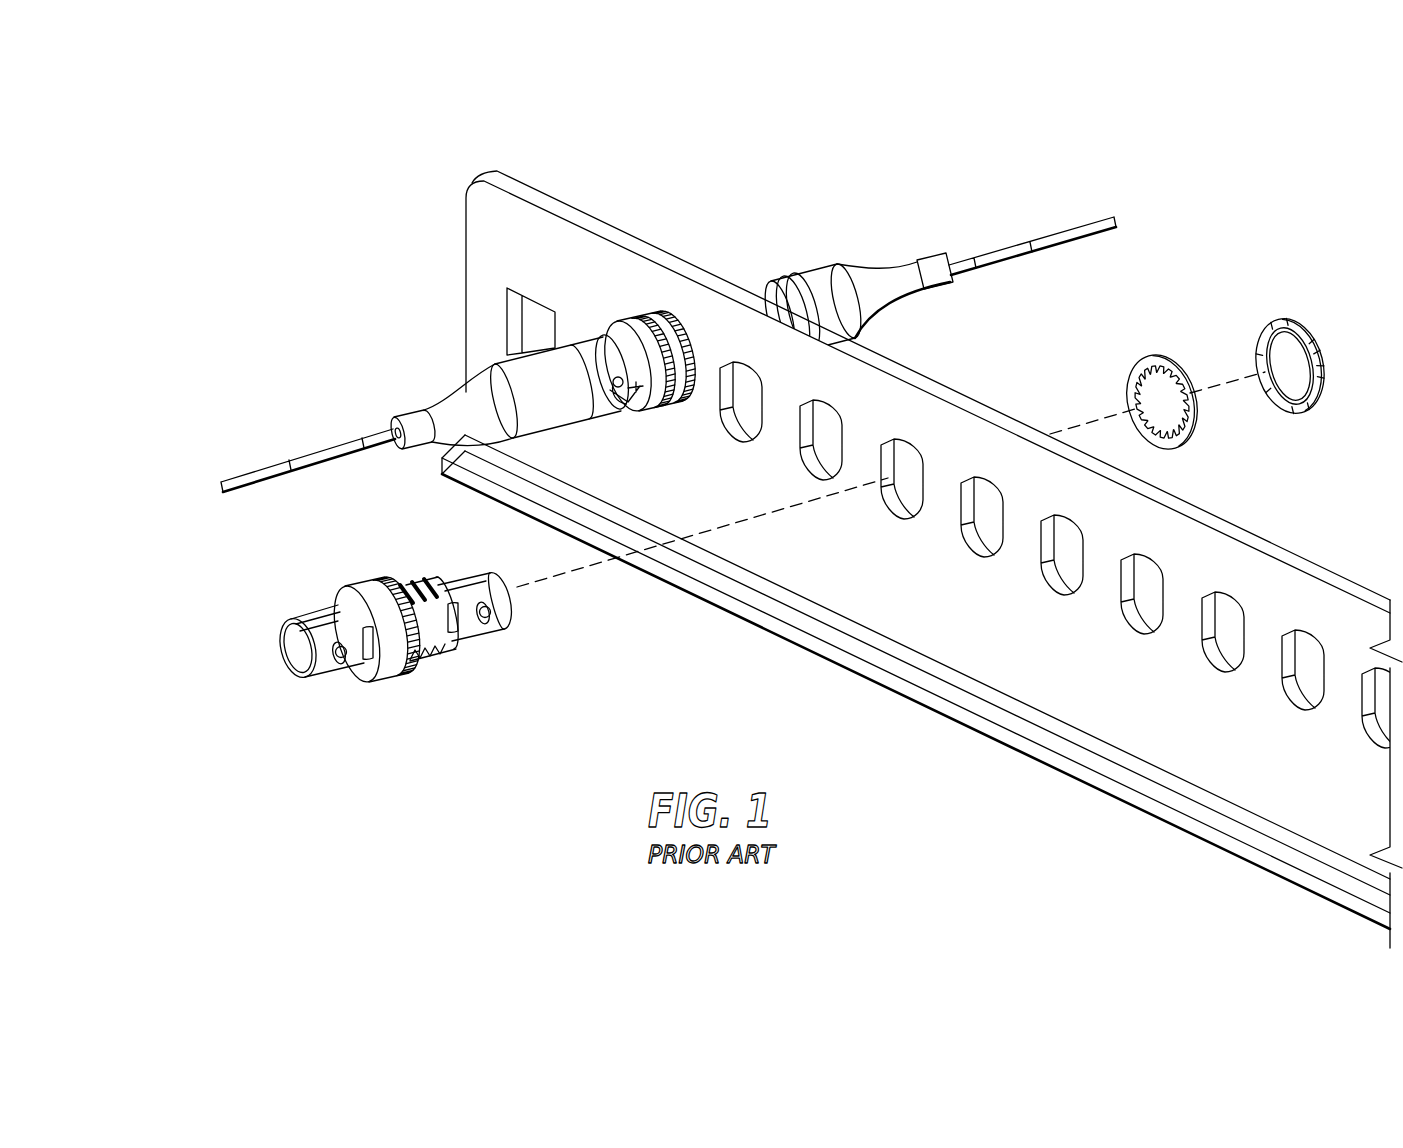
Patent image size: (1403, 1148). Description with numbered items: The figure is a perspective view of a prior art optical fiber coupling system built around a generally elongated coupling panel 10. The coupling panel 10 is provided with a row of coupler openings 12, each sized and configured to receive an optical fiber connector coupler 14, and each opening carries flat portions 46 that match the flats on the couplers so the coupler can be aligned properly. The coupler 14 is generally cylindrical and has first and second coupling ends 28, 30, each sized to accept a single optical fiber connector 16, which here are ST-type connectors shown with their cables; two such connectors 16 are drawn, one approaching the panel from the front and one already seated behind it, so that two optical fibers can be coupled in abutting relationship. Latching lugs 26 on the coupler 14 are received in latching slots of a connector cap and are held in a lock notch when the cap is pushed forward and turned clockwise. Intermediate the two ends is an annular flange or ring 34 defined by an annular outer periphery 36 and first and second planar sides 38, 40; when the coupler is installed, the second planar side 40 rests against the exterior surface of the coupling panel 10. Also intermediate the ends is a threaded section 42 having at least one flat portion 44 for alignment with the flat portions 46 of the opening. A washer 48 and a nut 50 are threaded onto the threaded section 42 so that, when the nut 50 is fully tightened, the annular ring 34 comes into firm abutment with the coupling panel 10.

The coupling panel 10 is at (1316, 494).
The coupler opening 12 is at (830, 408).
The optical fiber connector coupler 14 is at (397, 647).
The optical fiber connector 16 is at (750, 256).
The latching lug 26 is at (347, 668).
The first coupling end 28 is at (262, 663).
The second coupling end 30 is at (535, 605).
The annular flange or ring 34 is at (379, 647).
The annular outer periphery 36 is at (373, 585).
The first planar side 38 is at (372, 672).
The second planar side 40 is at (413, 670).
The threaded section 42 is at (410, 583).
The flat portion 44 is at (447, 653).
The flat portion 46 is at (962, 508).
The washer 48 is at (1138, 366).
The nut 50 is at (1262, 333).